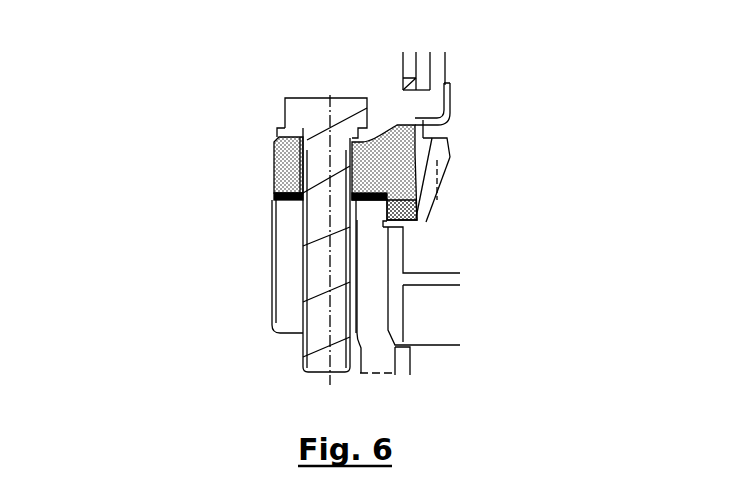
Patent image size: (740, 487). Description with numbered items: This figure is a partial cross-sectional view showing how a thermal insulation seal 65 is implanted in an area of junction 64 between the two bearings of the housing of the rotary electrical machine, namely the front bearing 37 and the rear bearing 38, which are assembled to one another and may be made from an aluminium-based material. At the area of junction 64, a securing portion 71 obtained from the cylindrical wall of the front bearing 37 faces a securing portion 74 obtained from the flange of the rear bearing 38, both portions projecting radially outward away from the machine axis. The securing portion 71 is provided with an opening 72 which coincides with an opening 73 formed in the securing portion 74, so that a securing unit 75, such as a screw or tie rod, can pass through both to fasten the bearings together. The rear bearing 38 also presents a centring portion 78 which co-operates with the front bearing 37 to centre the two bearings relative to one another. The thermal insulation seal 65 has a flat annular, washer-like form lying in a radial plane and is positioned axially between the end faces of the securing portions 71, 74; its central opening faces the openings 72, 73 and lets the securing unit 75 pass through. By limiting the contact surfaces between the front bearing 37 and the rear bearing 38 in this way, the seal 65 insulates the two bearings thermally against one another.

The area of junction 64 is at (262, 188).
The thermal insulation seal 65 is at (276, 204).
The securing portion 71 is at (295, 277).
The opening 72 is at (297, 243).
The opening 73 is at (383, 143).
The securing portion 74 is at (287, 157).
The securing unit 75 is at (303, 298).
The centring portion 78 is at (405, 205).
The rear bearing 38 is at (432, 137).
The front bearing 37 is at (430, 308).